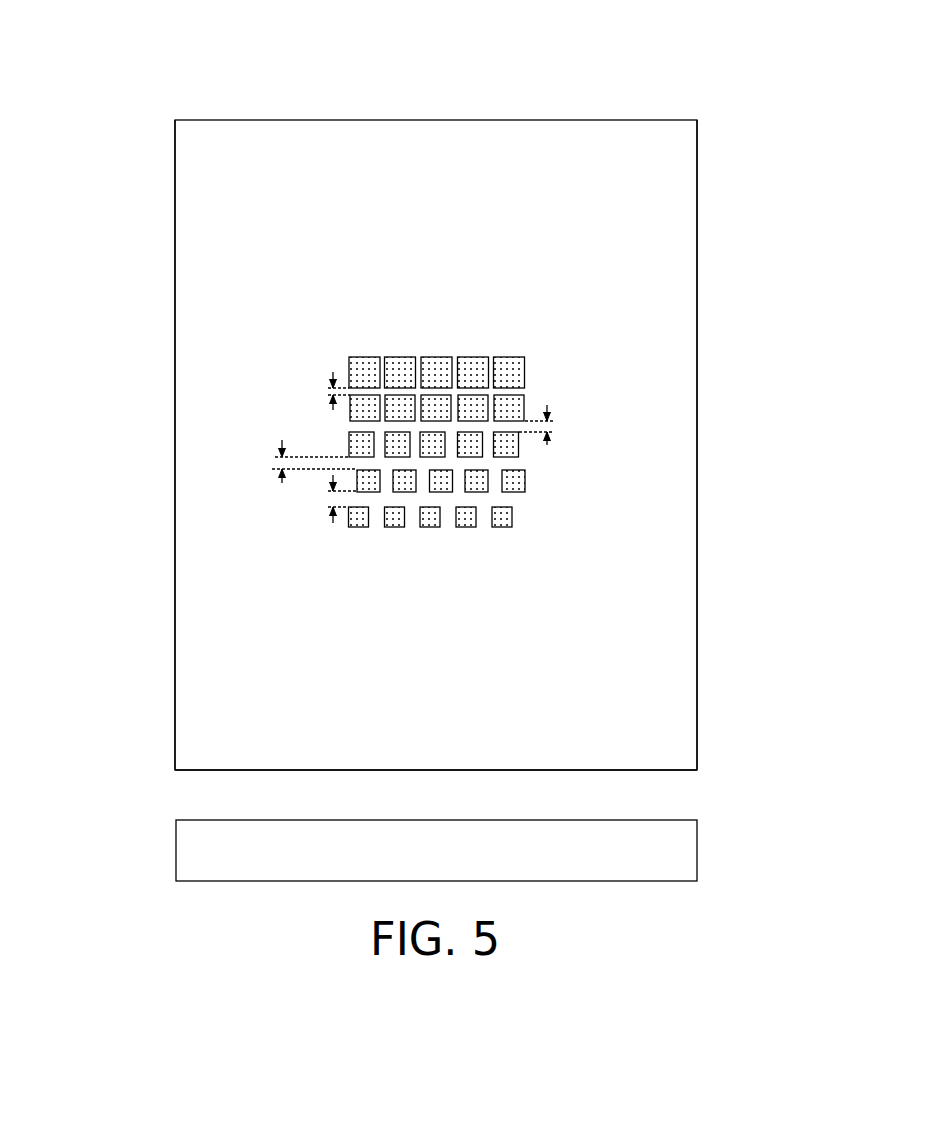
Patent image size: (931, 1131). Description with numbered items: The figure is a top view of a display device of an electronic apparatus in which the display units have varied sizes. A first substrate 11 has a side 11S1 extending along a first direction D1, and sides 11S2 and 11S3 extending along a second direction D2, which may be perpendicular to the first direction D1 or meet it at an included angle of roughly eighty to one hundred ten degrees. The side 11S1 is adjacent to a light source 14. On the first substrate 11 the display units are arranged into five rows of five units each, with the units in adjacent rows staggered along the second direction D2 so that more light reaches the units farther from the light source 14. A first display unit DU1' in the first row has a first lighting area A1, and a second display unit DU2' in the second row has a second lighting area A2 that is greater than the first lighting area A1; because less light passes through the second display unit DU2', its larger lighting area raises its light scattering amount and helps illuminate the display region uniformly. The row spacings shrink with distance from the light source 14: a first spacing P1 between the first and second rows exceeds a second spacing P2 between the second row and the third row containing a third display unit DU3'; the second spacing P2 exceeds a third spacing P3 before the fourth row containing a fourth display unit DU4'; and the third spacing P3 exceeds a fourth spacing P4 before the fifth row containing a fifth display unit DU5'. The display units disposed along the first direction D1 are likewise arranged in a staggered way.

The first substrate 11 is at (690, 153).
The light source 14 is at (450, 862).
The side 11S1 is at (232, 770).
The side 11S2 is at (175, 443).
The side 11S3 is at (697, 551).
The first display unit DU1' is at (536, 569).
The second display unit DU2' is at (551, 478).
The third display unit DU3' is at (446, 512).
The fourth display unit DU4' is at (476, 345).
The fifth display unit DU5' is at (431, 347).
The first lighting area A1 is at (513, 515).
The second lighting area A2 is at (526, 471).
The first spacing P1 is at (329, 496).
The second spacing P2 is at (302, 459).
The third spacing P3 is at (550, 420).
The fourth spacing P4 is at (322, 388).
The first direction D1 is at (65, 13).
The second direction D2 is at (65, 13).